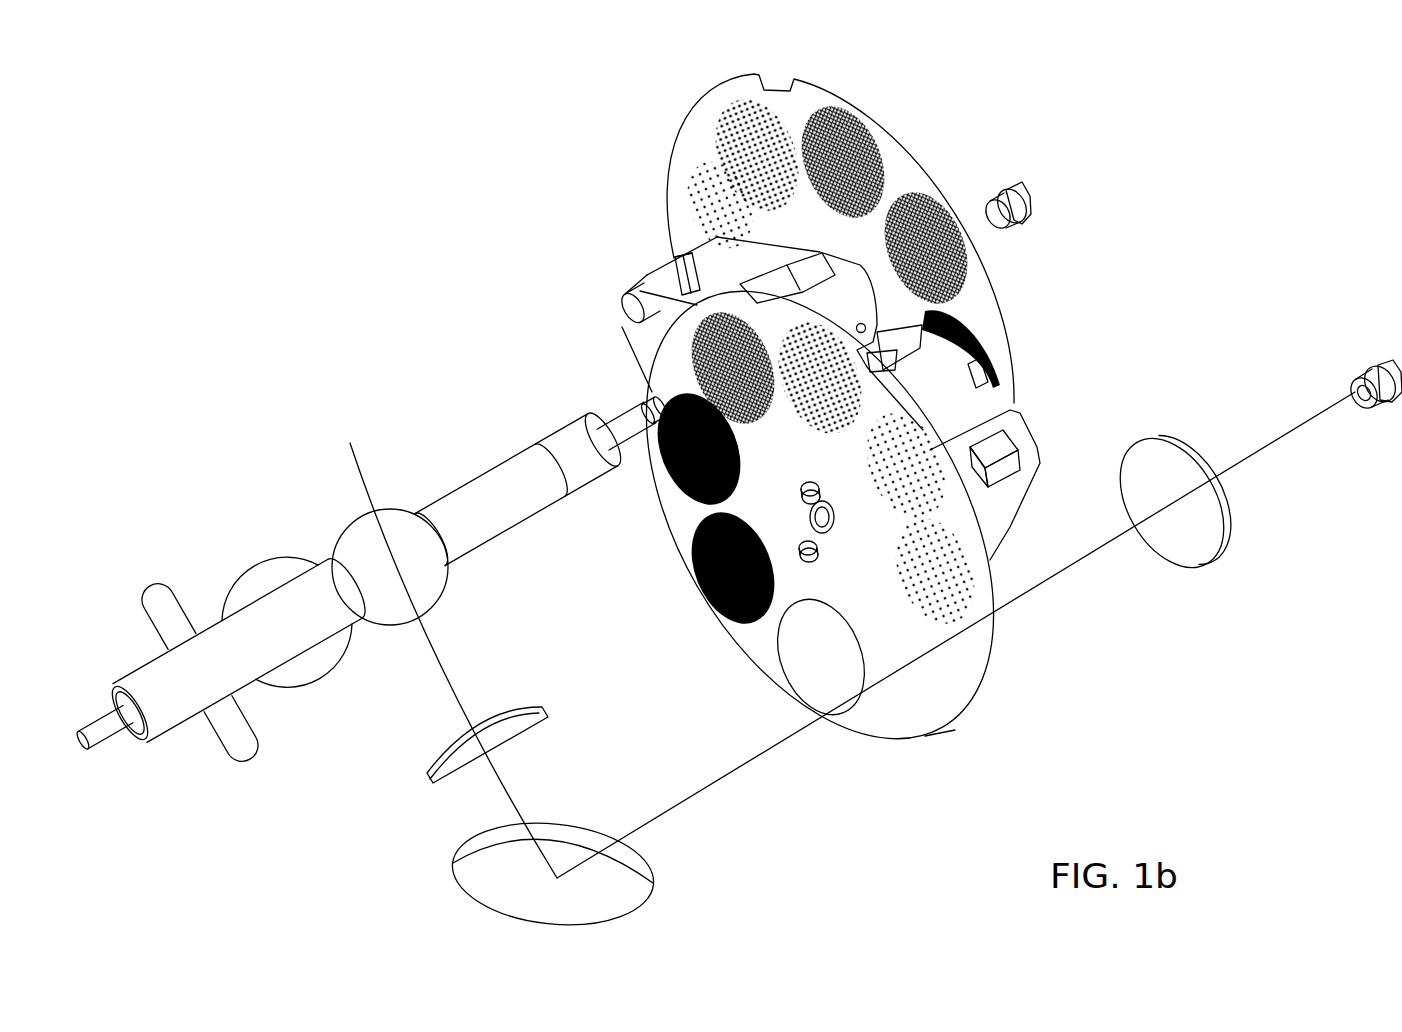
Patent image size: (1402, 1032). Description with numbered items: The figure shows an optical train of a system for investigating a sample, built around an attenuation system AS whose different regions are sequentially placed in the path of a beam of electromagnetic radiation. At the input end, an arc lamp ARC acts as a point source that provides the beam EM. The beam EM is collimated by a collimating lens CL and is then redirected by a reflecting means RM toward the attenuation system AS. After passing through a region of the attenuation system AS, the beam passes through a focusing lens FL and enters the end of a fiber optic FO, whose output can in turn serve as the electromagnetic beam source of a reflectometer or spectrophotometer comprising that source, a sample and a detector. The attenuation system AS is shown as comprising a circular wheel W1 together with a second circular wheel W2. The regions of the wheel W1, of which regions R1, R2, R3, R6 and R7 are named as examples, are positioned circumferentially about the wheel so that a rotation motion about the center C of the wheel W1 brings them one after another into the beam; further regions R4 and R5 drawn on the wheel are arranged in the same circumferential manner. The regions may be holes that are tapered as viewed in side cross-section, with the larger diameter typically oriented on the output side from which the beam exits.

The circular wheel W1 is at (869, 515).
The circular wheel W2 is at (852, 224).
The region R1 is at (763, 664).
The region R2 is at (1020, 571).
The region R3 is at (1042, 467).
The filter region 4 R4 is at (994, 305).
The filter region 5 R5 is at (604, 267).
The region R6 is at (571, 383).
The region R7 is at (664, 568).
The center of wheel C is at (927, 522).
The attenuation system AS is at (1002, 768).
The collimating lens CL is at (554, 710).
The reflecting means RM is at (621, 874).
The focusing lens FL is at (1217, 533).
The fiber optic FO is at (1298, 339).
The beam of electromagnetic radiation EM is at (365, 581).
The arc lamp point source ARC is at (381, 653).